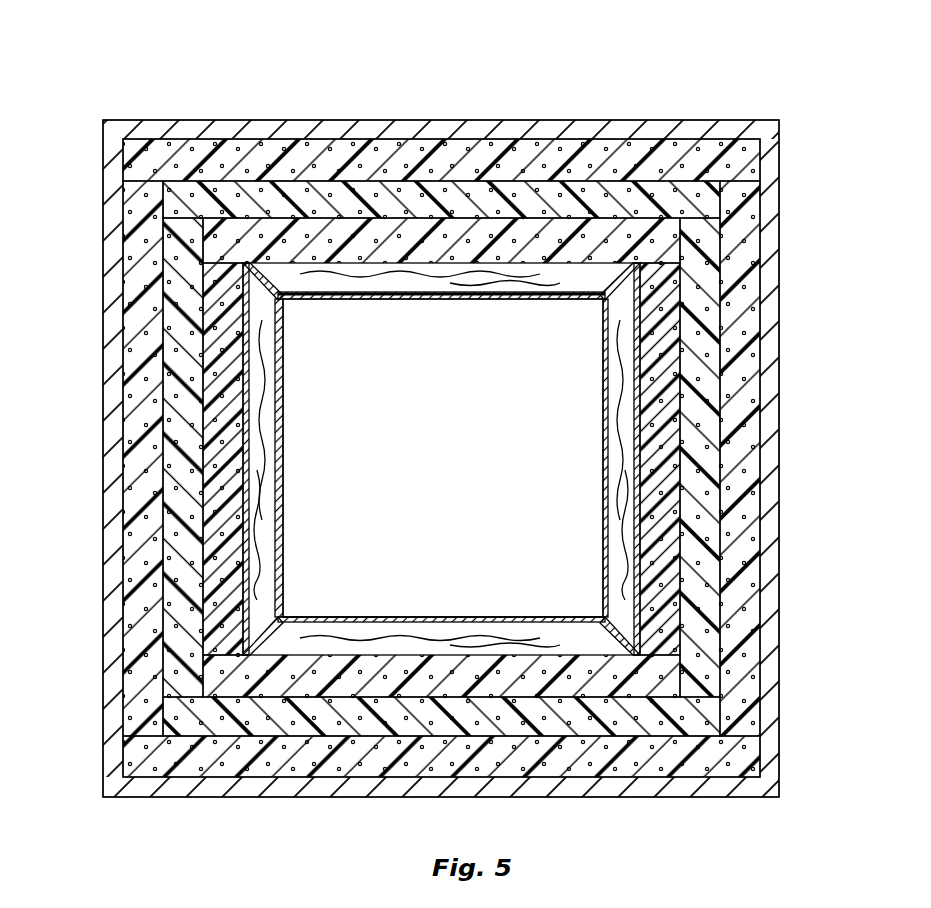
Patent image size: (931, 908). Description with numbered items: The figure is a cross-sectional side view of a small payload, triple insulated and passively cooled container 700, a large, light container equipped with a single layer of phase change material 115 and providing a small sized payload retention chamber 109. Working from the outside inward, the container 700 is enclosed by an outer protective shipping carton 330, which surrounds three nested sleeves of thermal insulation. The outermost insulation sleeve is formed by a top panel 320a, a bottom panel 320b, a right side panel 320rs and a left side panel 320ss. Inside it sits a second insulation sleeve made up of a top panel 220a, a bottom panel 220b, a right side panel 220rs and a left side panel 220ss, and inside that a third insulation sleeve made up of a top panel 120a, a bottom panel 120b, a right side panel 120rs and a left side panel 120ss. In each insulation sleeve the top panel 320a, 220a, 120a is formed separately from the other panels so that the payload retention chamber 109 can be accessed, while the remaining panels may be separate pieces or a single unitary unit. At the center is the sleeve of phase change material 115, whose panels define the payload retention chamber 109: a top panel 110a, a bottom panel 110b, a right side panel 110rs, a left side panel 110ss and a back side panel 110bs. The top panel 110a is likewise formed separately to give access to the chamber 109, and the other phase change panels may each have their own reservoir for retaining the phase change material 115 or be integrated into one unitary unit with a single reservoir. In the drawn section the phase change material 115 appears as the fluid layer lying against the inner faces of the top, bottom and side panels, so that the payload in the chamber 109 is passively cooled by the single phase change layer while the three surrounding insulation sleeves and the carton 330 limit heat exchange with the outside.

The triple insulated container 700 is at (114, 74).
The outer protective shipping carton 330 is at (728, 140).
The top panel of thermal insulation sleeve 320a is at (625, 165).
The left side panel of thermal insulation sleeve 320ss is at (136, 283).
The right side panel of thermal insulation sleeve 320rs is at (742, 302).
The bottom panel of thermal insulation sleeve 320b is at (210, 762).
The top panel of thermal insulation sleeve 120a is at (567, 228).
The left side panel of thermal insulation sleeve 120ss is at (212, 360).
The right side panel of thermal insulation sleeve 120rs is at (708, 365).
The bottom panel of thermal insulation sleeve 120b is at (345, 712).
The top panel of thermal insulation sleeve 220a is at (514, 197).
The left side panel of thermal insulation sleeve 220ss is at (165, 445).
The right side panel of thermal insulation sleeve 220rs is at (700, 530).
The bottom panel of thermal insulation sleeve 220b is at (531, 680).
The payload retention chamber 109 is at (409, 408).
The top panel of phase change material sleeve 110a is at (393, 300).
The left side panel of phase change material sleeve 110ss is at (284, 414).
The right side panel of phase change material sleeve 110rs is at (603, 432).
The bottom panel of phase change material sleeve 110b is at (513, 617).
The back side panel of phase change material sleeve 110bs is at (377, 524).
The phase change material 115 is at (541, 282).